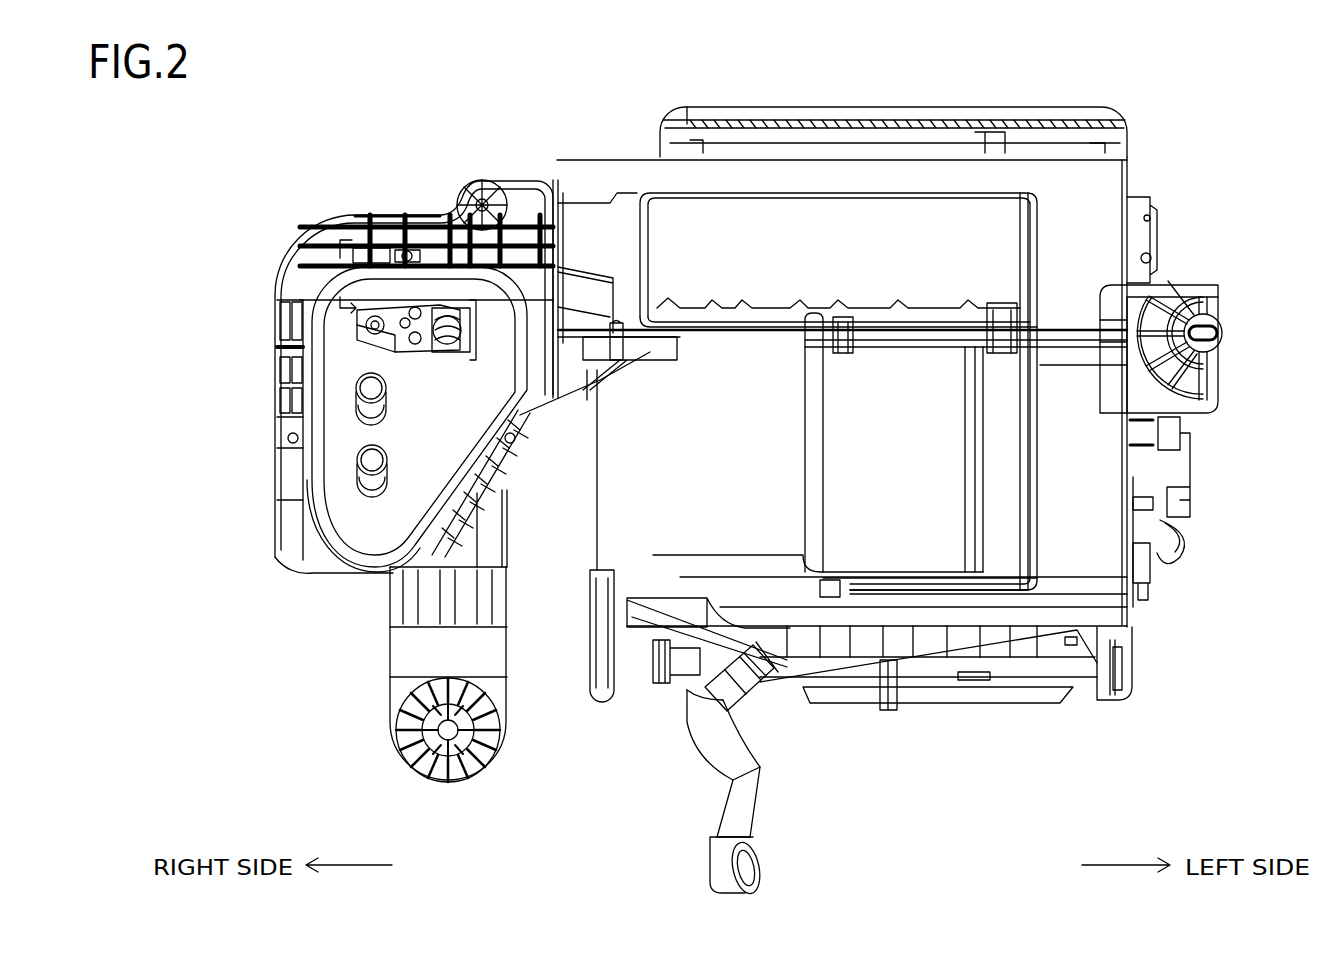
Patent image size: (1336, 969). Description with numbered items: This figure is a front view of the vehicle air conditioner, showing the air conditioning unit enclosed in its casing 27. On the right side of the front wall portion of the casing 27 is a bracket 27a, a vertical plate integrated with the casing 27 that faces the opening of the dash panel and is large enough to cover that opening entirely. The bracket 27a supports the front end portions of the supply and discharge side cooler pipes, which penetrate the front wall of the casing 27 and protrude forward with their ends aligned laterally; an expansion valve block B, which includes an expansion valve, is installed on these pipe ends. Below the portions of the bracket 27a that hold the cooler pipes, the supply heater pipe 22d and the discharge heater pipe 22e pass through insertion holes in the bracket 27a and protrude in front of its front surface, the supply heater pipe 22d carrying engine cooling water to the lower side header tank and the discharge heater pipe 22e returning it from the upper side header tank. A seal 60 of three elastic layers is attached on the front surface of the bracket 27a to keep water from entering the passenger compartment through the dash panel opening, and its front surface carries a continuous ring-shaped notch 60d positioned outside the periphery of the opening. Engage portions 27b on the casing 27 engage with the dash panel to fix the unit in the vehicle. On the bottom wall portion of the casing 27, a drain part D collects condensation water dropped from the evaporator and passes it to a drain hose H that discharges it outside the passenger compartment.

The casing 27 is at (1105, 196).
The bracket 27a is at (276, 330).
The engage portion 27b is at (483, 180).
The seal 60 is at (305, 520).
The notch 60d is at (360, 557).
The expansion valve block B is at (398, 317).
The supply heater pipe 22d is at (358, 403).
The discharge heater pipe 22e is at (358, 481).
The drain part D is at (752, 690).
The drain hose H is at (737, 810).